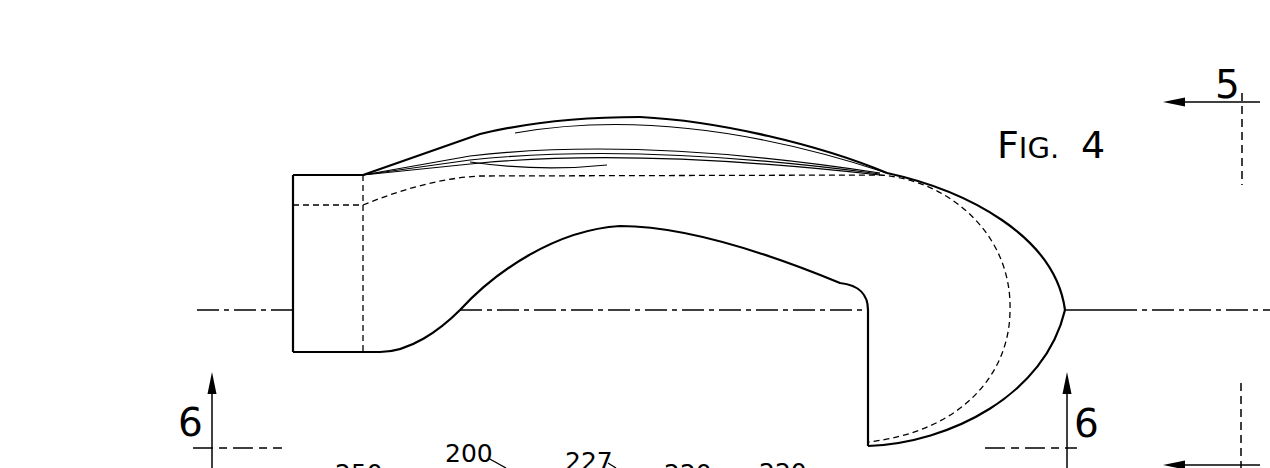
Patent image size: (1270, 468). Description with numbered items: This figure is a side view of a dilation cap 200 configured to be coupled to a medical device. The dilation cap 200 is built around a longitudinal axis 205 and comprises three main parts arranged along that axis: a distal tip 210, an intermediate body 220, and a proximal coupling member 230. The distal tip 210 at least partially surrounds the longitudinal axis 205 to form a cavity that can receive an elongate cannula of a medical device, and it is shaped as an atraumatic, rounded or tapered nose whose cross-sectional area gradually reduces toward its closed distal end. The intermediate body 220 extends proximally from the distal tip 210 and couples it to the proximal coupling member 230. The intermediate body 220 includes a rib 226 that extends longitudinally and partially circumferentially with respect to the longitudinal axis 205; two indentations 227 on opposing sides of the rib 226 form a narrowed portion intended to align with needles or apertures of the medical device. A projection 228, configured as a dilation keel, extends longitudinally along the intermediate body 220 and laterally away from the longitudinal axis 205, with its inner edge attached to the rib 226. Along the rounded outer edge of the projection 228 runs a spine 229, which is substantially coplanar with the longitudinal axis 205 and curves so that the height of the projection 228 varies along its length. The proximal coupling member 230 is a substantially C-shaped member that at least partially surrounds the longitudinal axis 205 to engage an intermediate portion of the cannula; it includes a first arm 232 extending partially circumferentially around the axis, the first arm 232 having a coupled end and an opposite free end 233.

The dilation cap 200 is at (669, 241).
The longitudinal axis 205 is at (253, 308).
The distal tip 210 is at (1060, 228).
The intermediate body 220 is at (662, 100).
The rib 226 is at (463, 157).
The indentations 227 is at (663, 229).
The projection 228 is at (483, 137).
The spine 229 is at (625, 118).
The proximal coupling member 230 is at (285, 244).
The first arm 232 is at (293, 230).
The free end 233 is at (327, 353).